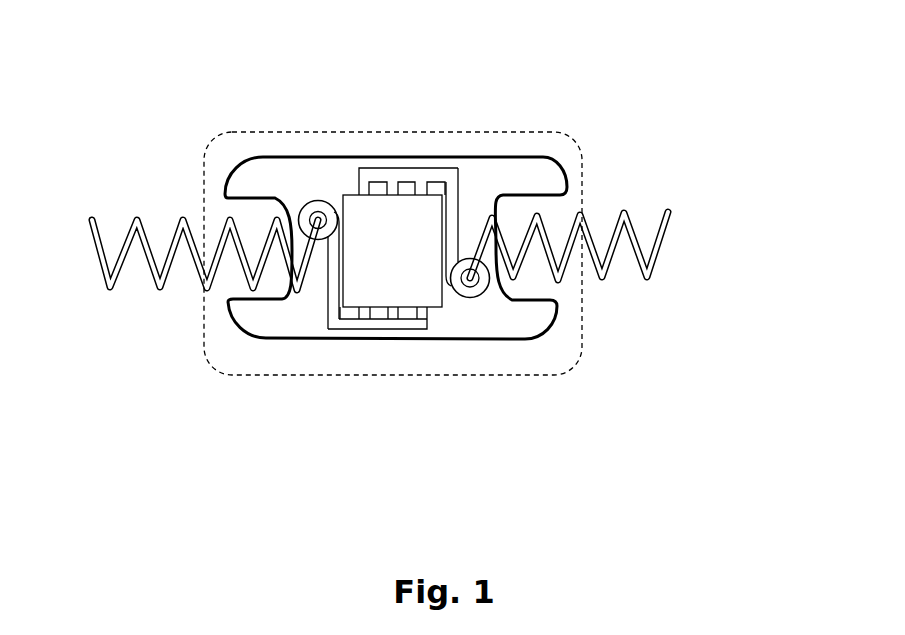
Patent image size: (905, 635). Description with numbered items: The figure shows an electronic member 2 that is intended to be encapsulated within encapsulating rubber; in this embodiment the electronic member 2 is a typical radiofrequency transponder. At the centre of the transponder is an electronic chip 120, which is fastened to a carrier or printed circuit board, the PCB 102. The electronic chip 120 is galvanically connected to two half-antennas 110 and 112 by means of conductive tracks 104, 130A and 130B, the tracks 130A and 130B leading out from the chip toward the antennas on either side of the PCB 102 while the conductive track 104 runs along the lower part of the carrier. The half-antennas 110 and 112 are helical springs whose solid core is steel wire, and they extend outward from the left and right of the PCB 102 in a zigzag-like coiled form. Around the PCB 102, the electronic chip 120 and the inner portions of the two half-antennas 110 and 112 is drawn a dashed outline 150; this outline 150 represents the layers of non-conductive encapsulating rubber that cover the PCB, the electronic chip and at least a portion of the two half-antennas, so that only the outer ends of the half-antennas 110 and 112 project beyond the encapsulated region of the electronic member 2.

The electronic member 2 is at (422, 275).
The carrier or PCB 102 is at (482, 158).
The conductive track 104 is at (402, 338).
The half-antenna 110 is at (180, 222).
The half-antenna 112 is at (667, 218).
The electronic chip 120 is at (376, 250).
The conductive track 130A is at (325, 200).
The conductive track 130B is at (462, 297).
The outline 150 is at (413, 133).